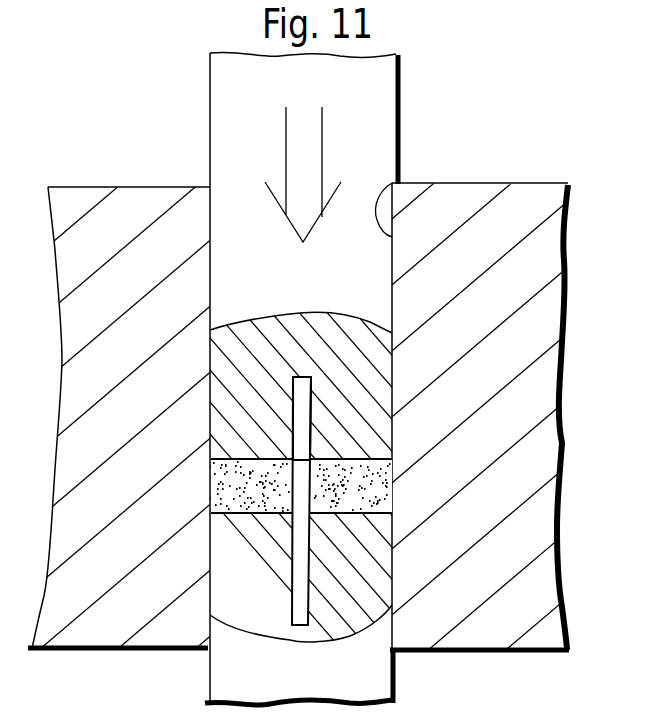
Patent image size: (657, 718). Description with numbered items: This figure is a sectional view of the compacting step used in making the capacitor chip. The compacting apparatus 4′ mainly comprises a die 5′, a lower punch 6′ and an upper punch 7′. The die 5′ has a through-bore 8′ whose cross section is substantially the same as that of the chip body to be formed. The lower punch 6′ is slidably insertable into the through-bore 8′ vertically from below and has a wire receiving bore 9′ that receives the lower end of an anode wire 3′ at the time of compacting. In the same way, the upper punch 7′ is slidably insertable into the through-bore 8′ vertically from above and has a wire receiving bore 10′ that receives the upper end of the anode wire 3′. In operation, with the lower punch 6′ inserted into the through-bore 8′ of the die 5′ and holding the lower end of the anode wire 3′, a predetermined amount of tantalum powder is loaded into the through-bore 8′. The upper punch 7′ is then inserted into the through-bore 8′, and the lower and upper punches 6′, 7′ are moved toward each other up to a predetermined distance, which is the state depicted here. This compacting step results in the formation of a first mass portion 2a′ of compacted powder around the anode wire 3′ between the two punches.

The compacting apparatus 4′ is at (173, 128).
The die 5′ is at (490, 183).
The upper punch 7′ is at (403, 90).
The through-bore 8′ is at (402, 167).
The anode wire 3′ is at (300, 570).
The first mass portion 2a′ is at (373, 475).
The wire receiving bore 9′ is at (307, 545).
The wire receiving bore 10′ is at (308, 404).
The lower punch 6′ is at (207, 673).